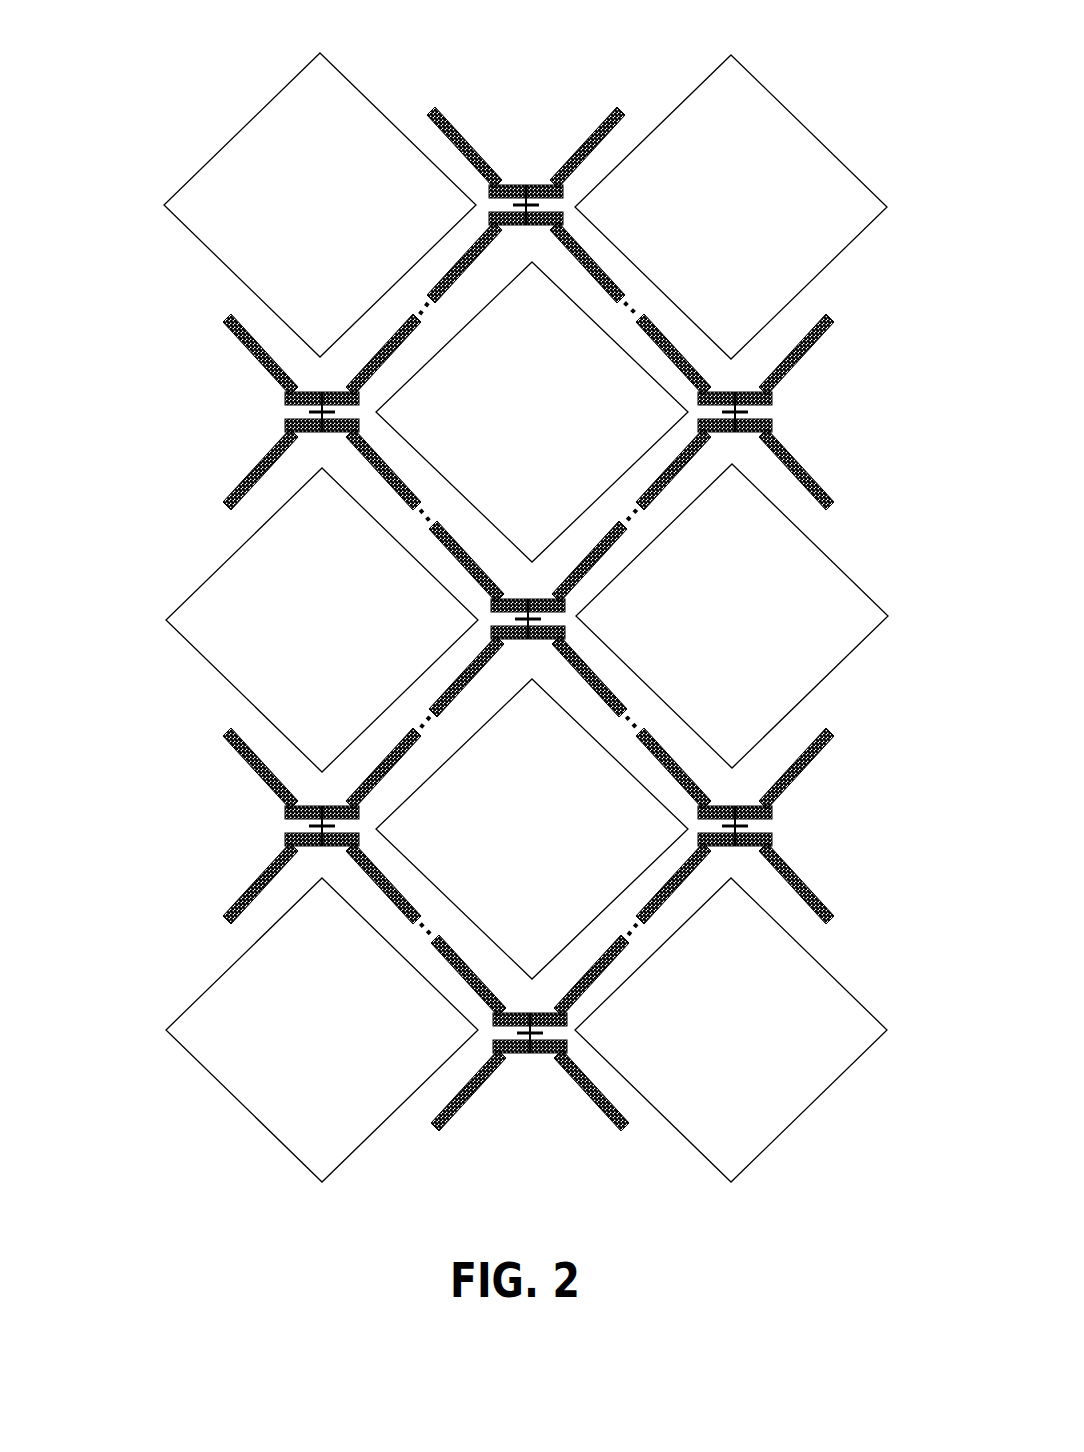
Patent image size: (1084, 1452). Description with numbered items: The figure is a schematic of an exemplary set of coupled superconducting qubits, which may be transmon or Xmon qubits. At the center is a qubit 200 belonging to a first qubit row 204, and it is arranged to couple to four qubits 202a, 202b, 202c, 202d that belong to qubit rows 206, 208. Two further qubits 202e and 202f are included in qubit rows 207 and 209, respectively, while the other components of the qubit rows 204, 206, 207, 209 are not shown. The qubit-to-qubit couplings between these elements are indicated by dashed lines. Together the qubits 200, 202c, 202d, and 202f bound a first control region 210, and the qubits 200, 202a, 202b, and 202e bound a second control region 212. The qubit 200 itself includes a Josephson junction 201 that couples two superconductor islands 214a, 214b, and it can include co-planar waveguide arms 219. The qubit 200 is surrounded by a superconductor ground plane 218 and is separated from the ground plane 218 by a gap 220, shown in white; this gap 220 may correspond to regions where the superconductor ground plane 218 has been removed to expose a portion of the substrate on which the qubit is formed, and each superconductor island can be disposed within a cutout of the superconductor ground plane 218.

The qubit 200 is at (543, 627).
The Josephson junction 201 is at (542, 619).
The qubit 202a is at (385, 362).
The qubit 202b is at (805, 347).
The qubit 202c is at (387, 770).
The qubit 202d is at (795, 766).
The qubit 202e is at (590, 142).
The qubit 202f is at (620, 1125).
The first qubit row 204 is at (504, 695).
The qubit row 206 is at (496, 412).
The qubit row 207 is at (128, 208).
The qubit row 208 is at (488, 826).
The qubit row 209 is at (132, 1047).
The first control region 210 is at (552, 894).
The second control region 212 is at (562, 367).
The superconductor island 214a is at (478, 566).
The superconductor island 214b is at (470, 670).
The superconductor ground plane 218 is at (203, 580).
The co-planar waveguide arms 219 is at (438, 538).
The gap 220 is at (612, 508).